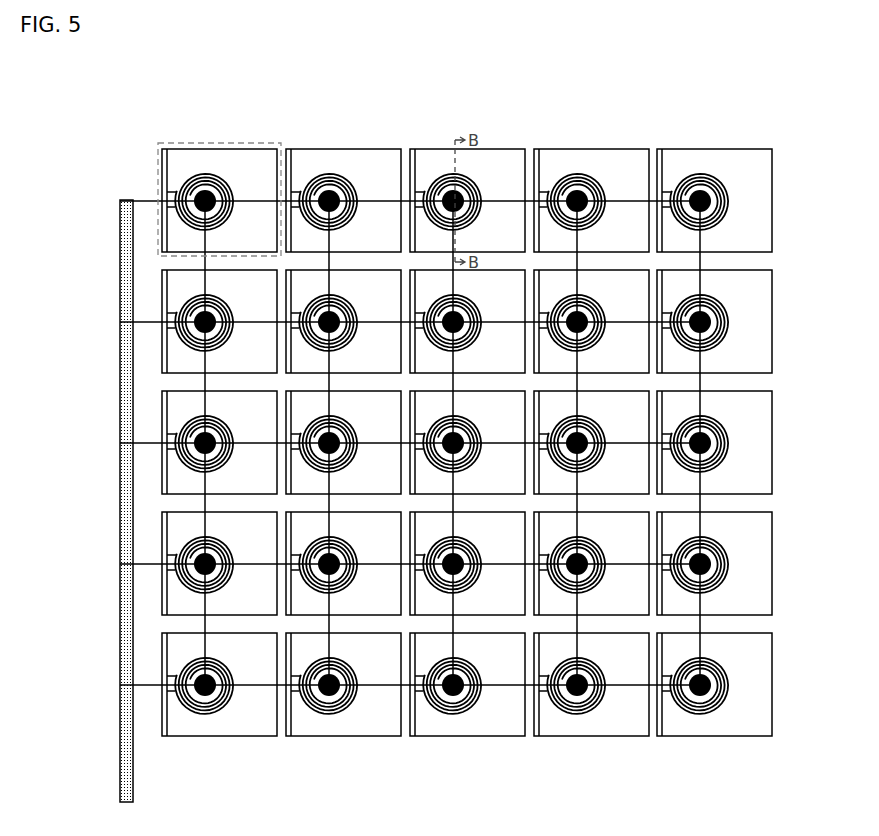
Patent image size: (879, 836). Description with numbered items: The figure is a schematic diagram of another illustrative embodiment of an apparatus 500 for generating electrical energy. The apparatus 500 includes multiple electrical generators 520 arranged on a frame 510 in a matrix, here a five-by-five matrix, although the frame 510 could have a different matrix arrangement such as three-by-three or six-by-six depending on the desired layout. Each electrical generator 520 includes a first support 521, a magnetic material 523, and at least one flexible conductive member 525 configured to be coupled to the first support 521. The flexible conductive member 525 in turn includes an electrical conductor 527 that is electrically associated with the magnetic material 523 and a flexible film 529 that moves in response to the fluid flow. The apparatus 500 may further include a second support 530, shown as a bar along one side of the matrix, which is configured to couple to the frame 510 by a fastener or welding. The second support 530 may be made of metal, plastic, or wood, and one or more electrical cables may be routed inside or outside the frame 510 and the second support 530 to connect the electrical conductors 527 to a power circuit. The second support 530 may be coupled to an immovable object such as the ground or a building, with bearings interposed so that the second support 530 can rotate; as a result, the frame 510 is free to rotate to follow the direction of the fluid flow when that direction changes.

The apparatus 500 is at (118, 82).
The frame 510 is at (385, 200).
The electrical generator 520 is at (157, 185).
The first support 521 is at (166, 168).
The magnetic material 523 is at (205, 197).
The flexible conductive member 525 is at (178, 148).
The electrical conductor 527 is at (229, 178).
The flexible film 529 is at (255, 168).
The second support 530 is at (120, 362).